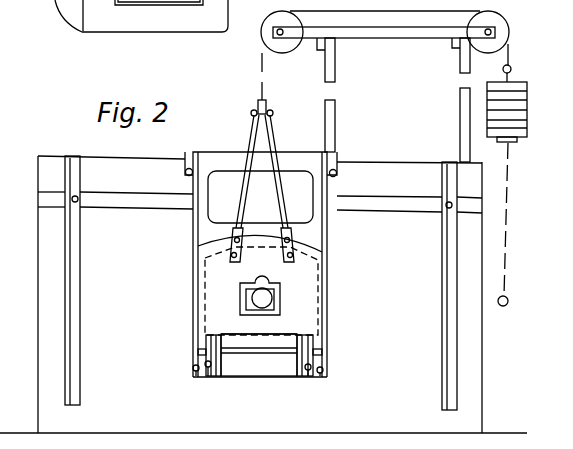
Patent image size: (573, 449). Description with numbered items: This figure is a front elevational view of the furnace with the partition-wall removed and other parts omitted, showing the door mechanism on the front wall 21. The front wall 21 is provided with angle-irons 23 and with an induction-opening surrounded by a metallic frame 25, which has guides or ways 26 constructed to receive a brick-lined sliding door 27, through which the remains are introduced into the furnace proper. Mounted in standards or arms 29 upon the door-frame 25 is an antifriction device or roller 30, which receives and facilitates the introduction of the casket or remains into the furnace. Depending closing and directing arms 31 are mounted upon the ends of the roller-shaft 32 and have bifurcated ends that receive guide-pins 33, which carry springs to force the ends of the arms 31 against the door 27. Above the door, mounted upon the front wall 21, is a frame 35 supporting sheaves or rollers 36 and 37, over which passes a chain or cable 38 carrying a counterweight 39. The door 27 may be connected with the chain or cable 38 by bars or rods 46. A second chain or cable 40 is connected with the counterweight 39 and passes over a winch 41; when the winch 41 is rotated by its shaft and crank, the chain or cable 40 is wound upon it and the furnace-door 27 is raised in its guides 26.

The front wall 21 is at (288, 347).
The angle-irons 23 is at (442, 369).
The metallic frame 25 is at (260, 264).
The guides or ways 26 is at (187, 180).
The sliding door 27 is at (261, 291).
The standards or arms 29 is at (292, 356).
The antifriction device or roller 30 is at (268, 334).
The closing and directing arms 31 is at (198, 353).
The roller-shaft 32 is at (206, 338).
The guide-pins 33 is at (208, 373).
The frame 35 is at (337, 62).
The sheave or roller 36 is at (282, 32).
The sheave or roller 37 is at (488, 32).
The chain or cable 38 is at (513, 52).
The counterweight 39 is at (528, 110).
The chain or cable 40 is at (519, 219).
The winch 41 is at (513, 309).
The bars or rods 46 is at (281, 194).